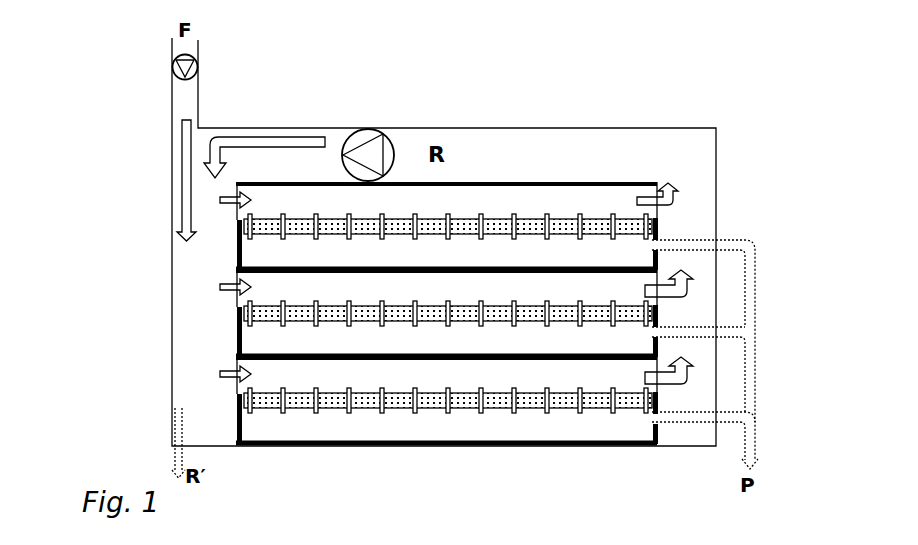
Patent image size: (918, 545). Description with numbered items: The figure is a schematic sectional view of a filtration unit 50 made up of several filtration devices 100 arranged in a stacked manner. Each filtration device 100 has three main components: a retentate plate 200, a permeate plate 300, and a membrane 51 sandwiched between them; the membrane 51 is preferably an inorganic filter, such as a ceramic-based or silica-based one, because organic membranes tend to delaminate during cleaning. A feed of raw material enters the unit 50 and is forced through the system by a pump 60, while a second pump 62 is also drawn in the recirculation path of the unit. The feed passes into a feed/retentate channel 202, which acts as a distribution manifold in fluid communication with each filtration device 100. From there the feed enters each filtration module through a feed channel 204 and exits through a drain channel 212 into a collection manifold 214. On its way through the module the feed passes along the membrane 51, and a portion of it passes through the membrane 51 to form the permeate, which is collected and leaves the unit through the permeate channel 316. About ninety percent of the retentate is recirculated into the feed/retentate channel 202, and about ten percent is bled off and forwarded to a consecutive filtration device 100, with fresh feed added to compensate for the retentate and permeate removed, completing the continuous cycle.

The filtration unit 50 is at (603, 97).
The membrane 51 is at (268, 227).
The pump 60 is at (193, 62).
The recirculation pump 62 is at (373, 142).
The filtration device 100 is at (214, 223).
The retentate plate 200 is at (466, 214).
The feed/retentate channel 202 is at (224, 337).
The feed channel 204 is at (271, 288).
The drain channel 212 is at (637, 284).
The collection manifold 214 is at (709, 167).
The permeate plate 300 is at (466, 262).
The permeate channel 316 is at (750, 247).